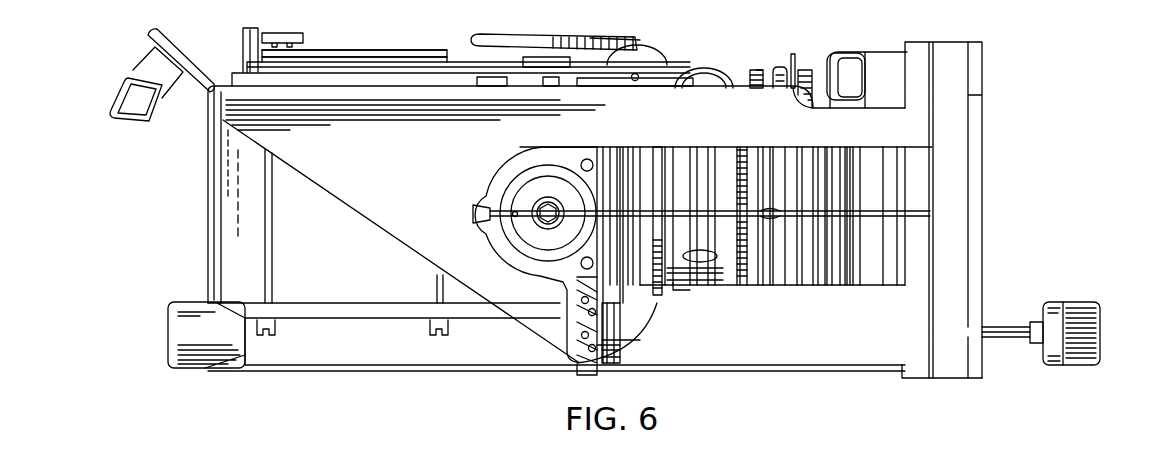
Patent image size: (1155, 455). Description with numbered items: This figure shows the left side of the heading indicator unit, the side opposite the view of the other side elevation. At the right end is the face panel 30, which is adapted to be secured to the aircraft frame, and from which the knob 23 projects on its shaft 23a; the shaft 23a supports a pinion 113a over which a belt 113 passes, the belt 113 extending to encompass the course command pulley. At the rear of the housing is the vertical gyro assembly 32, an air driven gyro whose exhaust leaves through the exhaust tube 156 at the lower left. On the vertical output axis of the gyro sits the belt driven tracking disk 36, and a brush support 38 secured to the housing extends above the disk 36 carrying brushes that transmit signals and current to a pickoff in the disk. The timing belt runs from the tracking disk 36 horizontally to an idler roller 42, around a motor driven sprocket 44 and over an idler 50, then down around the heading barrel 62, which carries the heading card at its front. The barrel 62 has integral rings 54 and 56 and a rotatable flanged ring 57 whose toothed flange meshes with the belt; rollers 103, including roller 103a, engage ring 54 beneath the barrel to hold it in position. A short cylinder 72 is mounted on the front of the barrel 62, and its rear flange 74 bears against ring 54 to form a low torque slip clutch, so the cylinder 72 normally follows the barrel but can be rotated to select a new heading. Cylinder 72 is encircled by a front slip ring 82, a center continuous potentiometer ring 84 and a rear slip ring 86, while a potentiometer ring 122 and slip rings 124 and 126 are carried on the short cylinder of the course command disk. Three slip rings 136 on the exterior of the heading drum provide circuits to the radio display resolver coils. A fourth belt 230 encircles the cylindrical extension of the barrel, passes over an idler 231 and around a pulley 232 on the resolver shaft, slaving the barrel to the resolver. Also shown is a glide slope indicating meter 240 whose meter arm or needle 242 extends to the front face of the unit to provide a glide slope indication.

The knob 23 is at (1101, 329).
The shaft 23a is at (1005, 325).
The face panel 30 is at (983, 140).
The vertical gyro assembly 32 is at (400, 241).
The tracking disk 36 is at (339, 49).
The brush support 38 is at (288, 33).
The idler roller 42 is at (478, 33).
The motor driven sprocket 44 is at (529, 56).
The idler 50 is at (704, 67).
The ring 54 is at (811, 101).
The ring 56 is at (759, 70).
The flanged ring 57 is at (748, 74).
The barrel 62 is at (680, 153).
The short cylinder 72 is at (757, 216).
The flange 74 is at (809, 71).
The front ring 82 is at (848, 264).
The center ring 84 is at (827, 277).
The rear ring 86 is at (818, 262).
The rollers 103 is at (781, 66).
The roller 103a is at (794, 56).
The belt 113 is at (609, 346).
The pinion 113a is at (628, 343).
The potentiometer ring 122 is at (630, 301).
The slip ring 124 is at (656, 298).
The slip ring 126 is at (623, 337).
The slip rings 136 is at (718, 260).
The exhaust tube 156 is at (167, 330).
The fourth belt 230 is at (570, 39).
The idler 231 is at (666, 62).
The pulley 232 is at (595, 37).
The glide slope indicating meter 240 is at (513, 183).
The meter arm or needle 242 is at (919, 210).